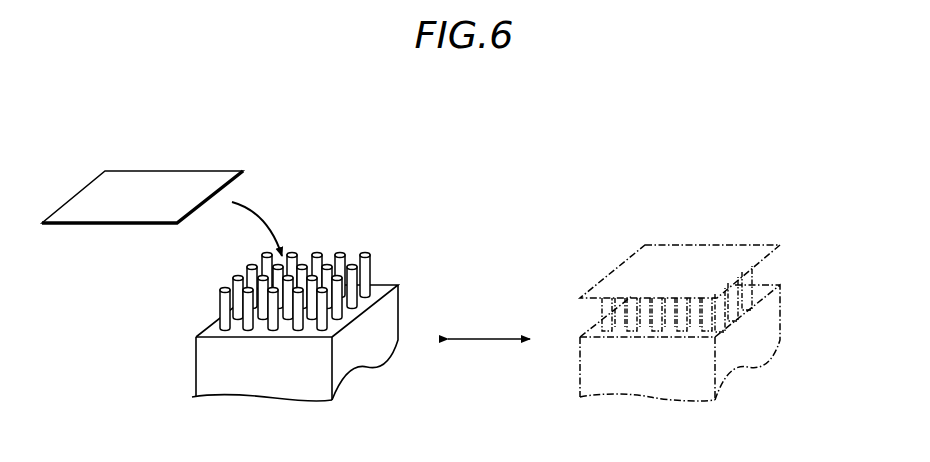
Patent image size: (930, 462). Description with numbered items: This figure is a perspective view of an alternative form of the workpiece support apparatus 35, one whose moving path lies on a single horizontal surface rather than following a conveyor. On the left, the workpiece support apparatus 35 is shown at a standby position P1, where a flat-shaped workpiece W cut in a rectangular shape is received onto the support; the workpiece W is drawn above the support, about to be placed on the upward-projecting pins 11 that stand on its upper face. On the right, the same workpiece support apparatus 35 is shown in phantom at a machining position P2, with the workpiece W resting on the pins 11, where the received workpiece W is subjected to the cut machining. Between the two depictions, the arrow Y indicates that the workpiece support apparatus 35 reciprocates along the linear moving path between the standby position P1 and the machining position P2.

The pins (electrodes) 11 is at (364, 252).
The workpiece support apparatus 35 is at (208, 382).
The workpiece W is at (210, 170).
The standby position P1 is at (398, 285).
The machining position P2 is at (782, 285).
The arrow Y is at (497, 338).